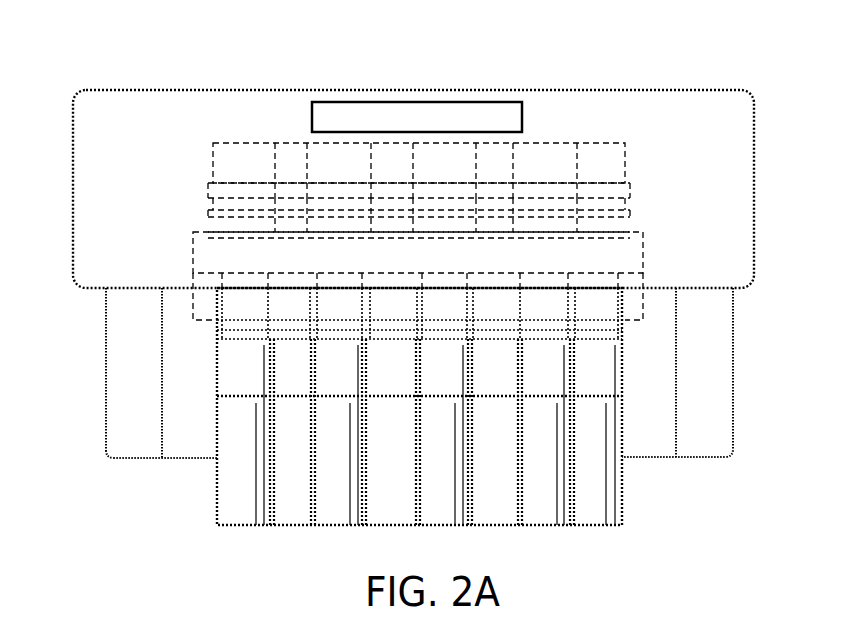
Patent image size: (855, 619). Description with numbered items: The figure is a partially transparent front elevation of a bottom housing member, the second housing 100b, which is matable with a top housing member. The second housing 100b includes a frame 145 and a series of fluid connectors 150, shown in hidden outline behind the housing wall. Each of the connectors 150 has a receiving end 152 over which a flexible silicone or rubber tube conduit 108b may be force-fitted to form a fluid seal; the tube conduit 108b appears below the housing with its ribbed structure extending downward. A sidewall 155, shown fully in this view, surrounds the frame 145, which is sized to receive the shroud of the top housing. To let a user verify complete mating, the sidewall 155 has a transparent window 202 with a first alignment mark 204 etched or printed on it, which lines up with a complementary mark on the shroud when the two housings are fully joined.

The second housing 100b is at (117, 62).
The sidewall 155 is at (756, 137).
The transparent window 202 is at (490, 100).
The first alignment mark 204 is at (417, 112).
The fluid connectors 150 is at (241, 163).
The frame 145 is at (735, 354).
The tube conduit 108b is at (630, 523).
The receiving end 152 is at (221, 352).